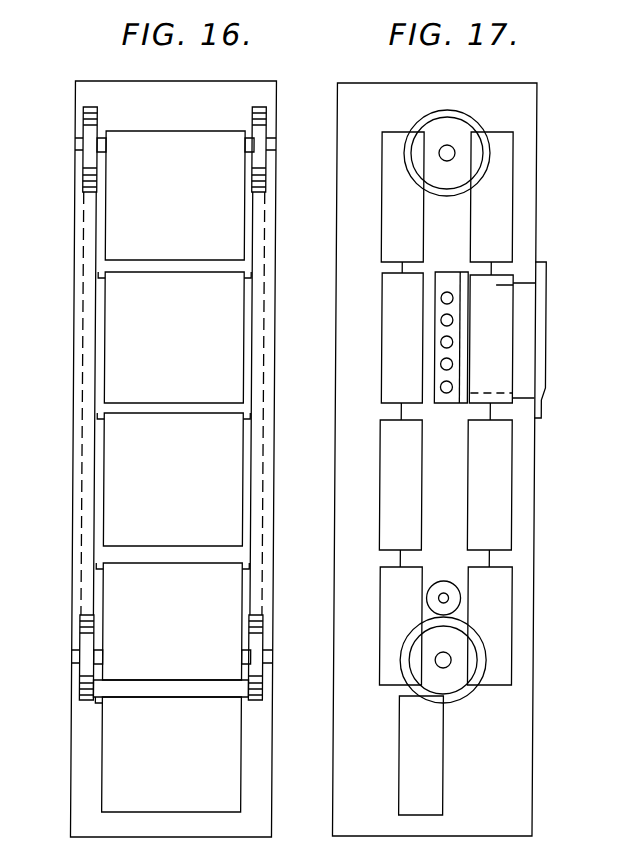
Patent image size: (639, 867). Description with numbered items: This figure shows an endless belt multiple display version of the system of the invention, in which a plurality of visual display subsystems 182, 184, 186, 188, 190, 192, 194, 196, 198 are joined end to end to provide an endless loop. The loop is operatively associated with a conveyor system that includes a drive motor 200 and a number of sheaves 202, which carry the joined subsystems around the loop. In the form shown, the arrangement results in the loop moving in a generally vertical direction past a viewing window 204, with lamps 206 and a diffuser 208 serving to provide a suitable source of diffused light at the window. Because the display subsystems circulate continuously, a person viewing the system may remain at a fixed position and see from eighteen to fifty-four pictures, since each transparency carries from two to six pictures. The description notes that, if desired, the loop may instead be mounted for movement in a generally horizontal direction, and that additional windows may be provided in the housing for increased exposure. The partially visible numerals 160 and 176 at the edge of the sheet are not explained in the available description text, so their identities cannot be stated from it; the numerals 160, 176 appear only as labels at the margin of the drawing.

In FIG. 16, the frame 160 is at (12, 268).
In FIG. 16, the frame member 176 is at (3, 755).
In FIG. 16, the visual display subsystem 182 is at (188, 345).
In FIG. 17, the visual display subsystem 182 is at (512, 340).
In FIG. 16, the visual display subsystem 184 is at (193, 199).
In FIG. 17, the visual display subsystem 184 is at (512, 192).
In FIG. 17, the visual display subsystem 186 is at (390, 221).
In FIG. 17, the visual display subsystem 188 is at (390, 330).
In FIG. 17, the visual display subsystem 190 is at (388, 481).
In FIG. 17, the visual display subsystem 192 is at (383, 597).
In FIG. 16, the visual display subsystem 194 is at (187, 760).
In FIG. 17, the visual display subsystem 194 is at (405, 758).
In FIG. 16, the visual display subsystem 196 is at (191, 625).
In FIG. 17, the visual display subsystem 196 is at (507, 598).
In FIG. 16, the visual display subsystem 198 is at (184, 478).
In FIG. 17, the visual display subsystem 198 is at (508, 485).
In FIG. 17, the drive motor 200 is at (460, 588).
In FIG. 16, the sheave 202 is at (81, 118).
In FIG. 17, the sheave 202 is at (487, 130).
In FIG. 17, the viewing window 204 is at (539, 370).
In FIG. 17, the lamp 206 is at (450, 297).
In FIG. 17, the diffuser 208 is at (470, 317).